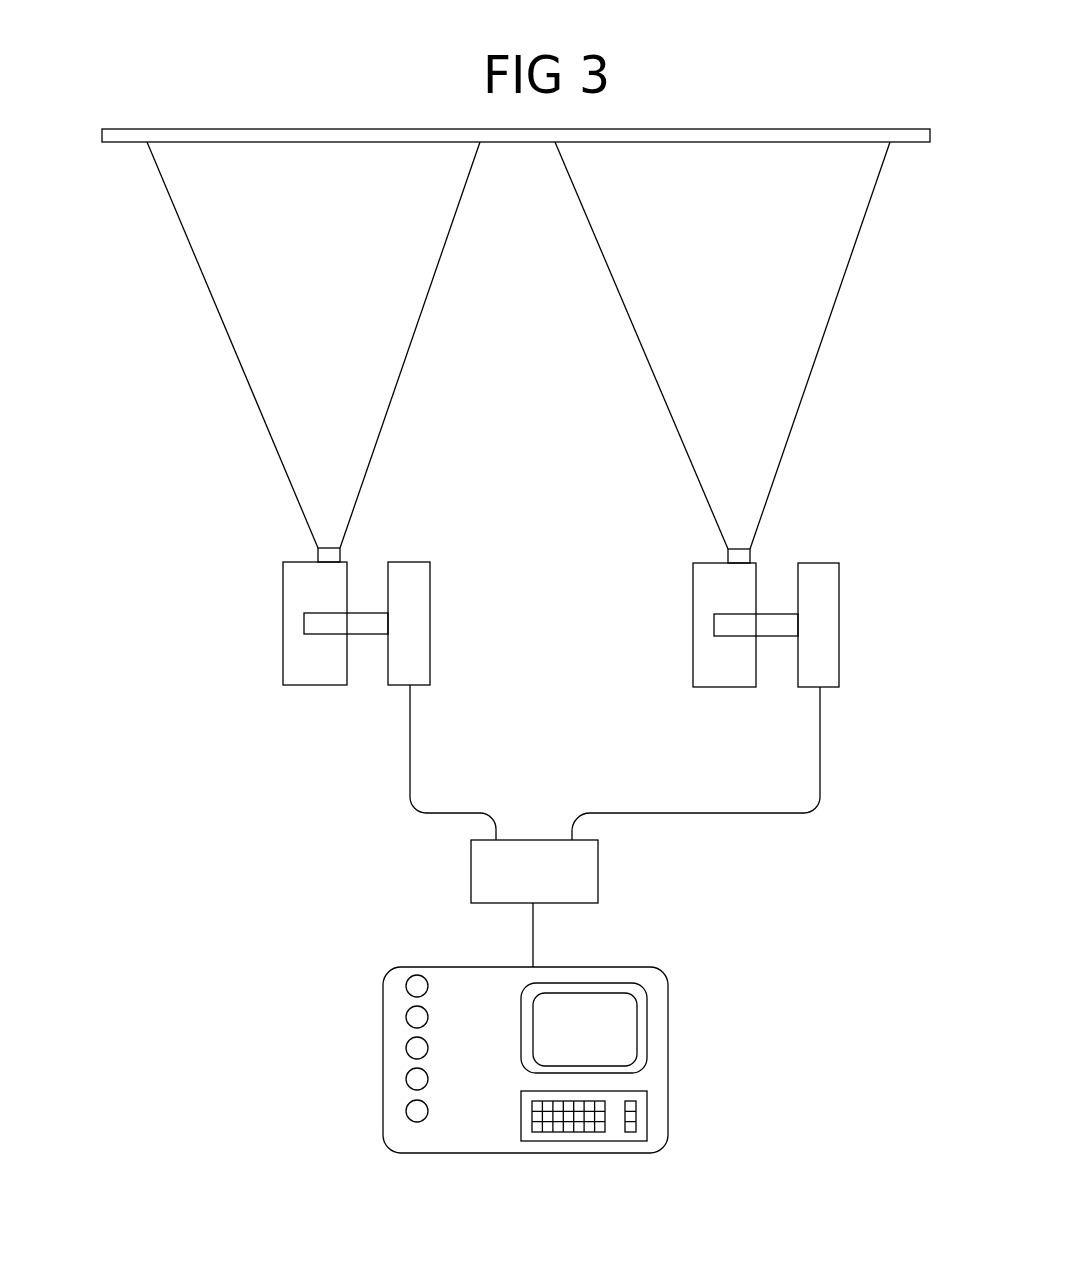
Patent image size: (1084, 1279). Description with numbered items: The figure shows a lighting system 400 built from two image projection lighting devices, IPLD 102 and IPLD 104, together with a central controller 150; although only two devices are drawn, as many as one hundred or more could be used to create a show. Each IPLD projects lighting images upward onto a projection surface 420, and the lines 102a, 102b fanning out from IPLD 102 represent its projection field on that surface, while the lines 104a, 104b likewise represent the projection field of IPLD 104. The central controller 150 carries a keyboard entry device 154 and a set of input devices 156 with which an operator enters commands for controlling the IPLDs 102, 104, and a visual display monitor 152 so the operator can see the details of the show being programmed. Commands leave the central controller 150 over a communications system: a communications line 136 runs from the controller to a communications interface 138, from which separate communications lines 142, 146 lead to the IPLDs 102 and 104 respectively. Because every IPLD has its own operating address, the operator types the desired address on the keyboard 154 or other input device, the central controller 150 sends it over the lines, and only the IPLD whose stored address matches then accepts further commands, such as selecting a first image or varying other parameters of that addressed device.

The lighting system 400 is at (140, 352).
The projection surface 420 is at (347, 152).
The IPLD 102 is at (273, 653).
The IPLD 104 is at (850, 660).
The line 102a is at (257, 382).
The line 102b is at (410, 367).
The line 104a is at (658, 362).
The line 104b is at (818, 355).
The communications line 142 is at (395, 752).
The communications line 146 is at (638, 817).
The communications interface 138 is at (471, 882).
The communications line 136 is at (540, 942).
The central controller 150 is at (382, 1059).
The visual display monitor 152 is at (652, 1025).
The keyboard entry device 154 is at (652, 1117).
The input devices 156 is at (443, 1038).